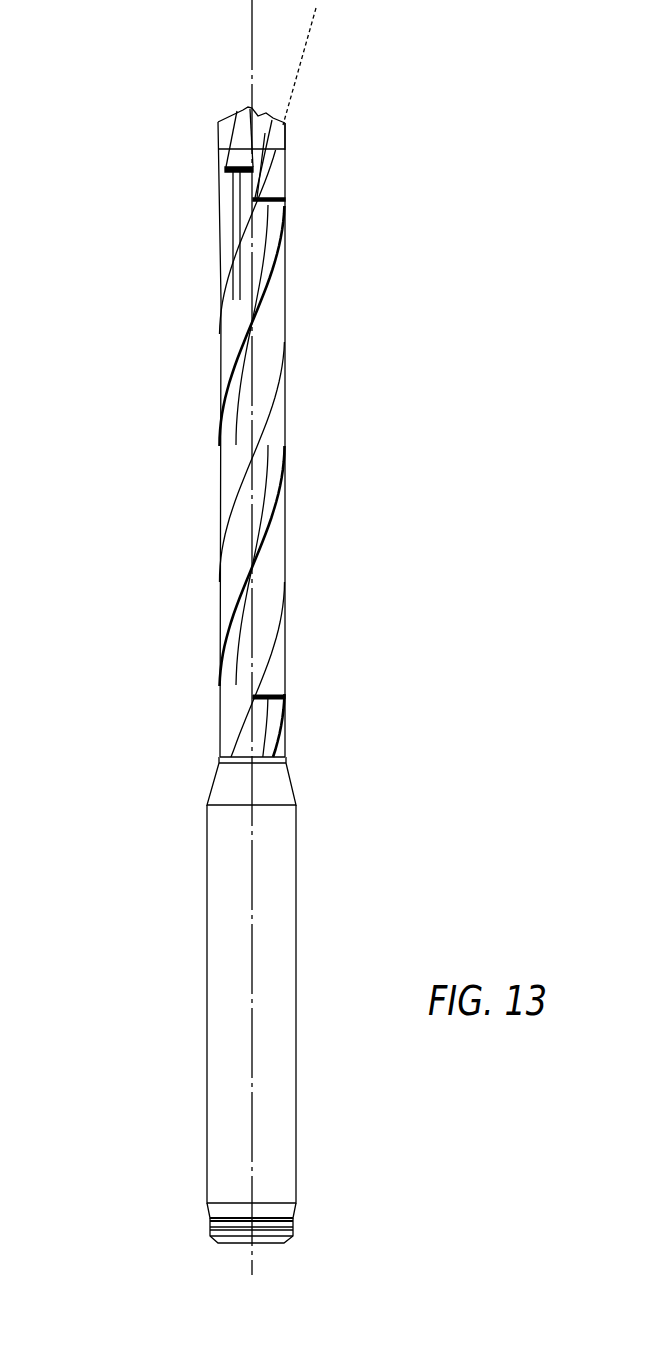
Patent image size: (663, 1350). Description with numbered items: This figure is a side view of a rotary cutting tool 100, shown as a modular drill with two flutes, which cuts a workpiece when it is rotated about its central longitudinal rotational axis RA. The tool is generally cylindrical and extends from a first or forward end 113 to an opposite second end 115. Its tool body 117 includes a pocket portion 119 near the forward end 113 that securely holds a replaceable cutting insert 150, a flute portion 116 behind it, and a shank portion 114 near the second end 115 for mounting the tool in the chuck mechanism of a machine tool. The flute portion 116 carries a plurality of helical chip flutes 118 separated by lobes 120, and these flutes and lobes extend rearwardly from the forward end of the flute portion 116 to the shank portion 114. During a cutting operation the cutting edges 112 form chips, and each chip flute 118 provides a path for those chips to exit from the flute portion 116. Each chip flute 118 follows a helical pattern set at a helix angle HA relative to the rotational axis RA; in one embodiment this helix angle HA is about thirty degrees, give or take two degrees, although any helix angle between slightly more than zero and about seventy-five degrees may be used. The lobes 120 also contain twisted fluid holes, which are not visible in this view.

The rotary cutting tool 100 is at (73, 650).
The cutting edges 112 is at (236, 111).
The first or forward end 113 is at (222, 88).
The shank portion 114 is at (200, 1045).
The second end 115 is at (272, 1256).
The flute portion 116 is at (205, 418).
The tool body 117 is at (200, 858).
The helical chip flutes 118 is at (228, 200).
The pocket portion 119 is at (214, 137).
The lobes 120 is at (237, 300).
The replaceable cutting insert 150 is at (292, 135).
The rotational axis RA is at (250, 35).
The helix angle HA is at (313, 15).